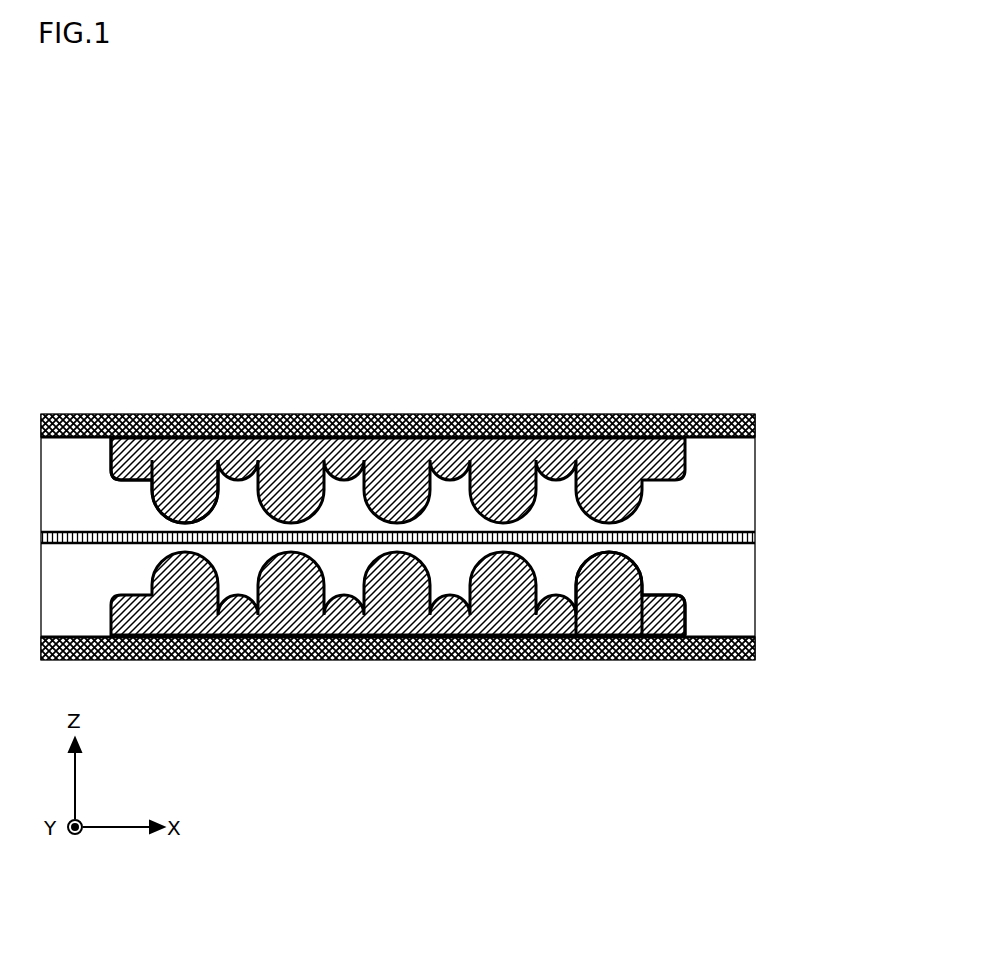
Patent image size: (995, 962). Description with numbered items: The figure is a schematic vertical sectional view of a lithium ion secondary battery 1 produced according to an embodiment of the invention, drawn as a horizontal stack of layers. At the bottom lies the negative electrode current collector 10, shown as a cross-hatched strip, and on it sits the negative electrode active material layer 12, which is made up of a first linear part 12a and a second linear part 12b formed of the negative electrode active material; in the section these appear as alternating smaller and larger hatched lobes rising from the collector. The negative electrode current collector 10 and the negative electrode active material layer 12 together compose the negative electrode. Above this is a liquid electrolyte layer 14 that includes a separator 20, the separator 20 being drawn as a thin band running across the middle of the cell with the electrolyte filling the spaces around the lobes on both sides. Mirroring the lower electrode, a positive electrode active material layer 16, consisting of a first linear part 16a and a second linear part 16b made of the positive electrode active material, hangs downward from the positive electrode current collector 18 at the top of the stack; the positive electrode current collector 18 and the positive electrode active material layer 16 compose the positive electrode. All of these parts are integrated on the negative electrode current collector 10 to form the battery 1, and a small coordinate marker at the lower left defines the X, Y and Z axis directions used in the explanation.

The lithium ion secondary battery 1 is at (463, 518).
The negative electrode current collector 10 is at (753, 652).
The negative electrode active material layer 12 is at (427, 683).
The first linear part 12a is at (658, 622).
The second linear part 12b is at (605, 595).
The liquid electrolyte layer 14 is at (733, 500).
The positive electrode active material layer 16 is at (398, 389).
The first linear part 16a is at (139, 455).
The second linear part 16b is at (181, 470).
The positive electrode current collector 18 is at (333, 432).
The separator 20 is at (757, 529).